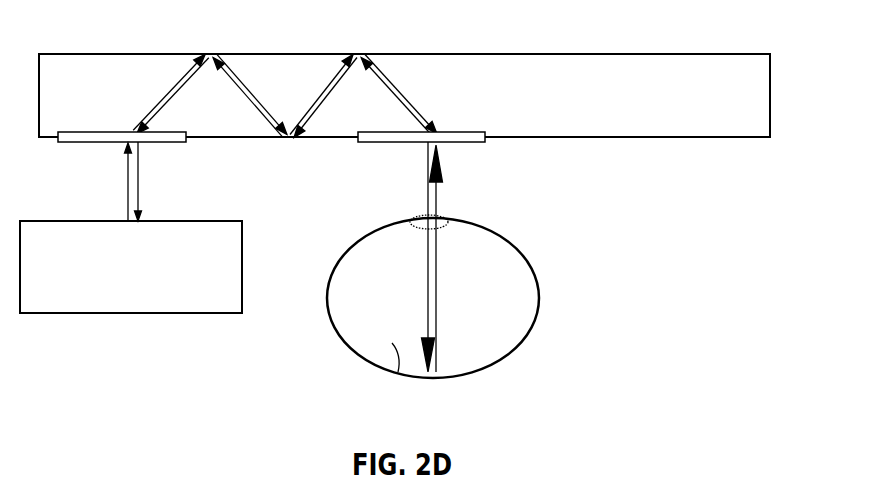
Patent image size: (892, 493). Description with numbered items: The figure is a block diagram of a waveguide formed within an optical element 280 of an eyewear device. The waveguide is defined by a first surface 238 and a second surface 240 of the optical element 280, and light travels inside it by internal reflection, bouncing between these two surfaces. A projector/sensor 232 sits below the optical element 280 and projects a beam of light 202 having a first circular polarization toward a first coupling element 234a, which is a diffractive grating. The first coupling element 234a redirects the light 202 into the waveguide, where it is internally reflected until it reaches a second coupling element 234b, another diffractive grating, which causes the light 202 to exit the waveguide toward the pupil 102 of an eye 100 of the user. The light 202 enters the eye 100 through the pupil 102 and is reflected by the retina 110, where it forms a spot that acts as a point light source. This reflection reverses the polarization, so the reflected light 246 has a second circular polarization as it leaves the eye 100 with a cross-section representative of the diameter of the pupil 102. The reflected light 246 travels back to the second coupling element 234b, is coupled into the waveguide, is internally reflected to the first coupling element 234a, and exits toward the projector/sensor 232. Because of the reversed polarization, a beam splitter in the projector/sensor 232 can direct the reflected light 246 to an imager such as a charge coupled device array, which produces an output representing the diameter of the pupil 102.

The eye 100 is at (505, 358).
The pupil 102 is at (443, 215).
The retina 110 is at (385, 339).
The beam of light 202 is at (126, 180).
The projector/sensor 232 is at (242, 290).
The first coupling element 234a is at (117, 144).
The second coupling element 234b is at (387, 144).
The first surface 238 is at (700, 137).
The second surface 240 is at (704, 54).
The reflected light 246 is at (140, 172).
The optical element 280 is at (770, 97).